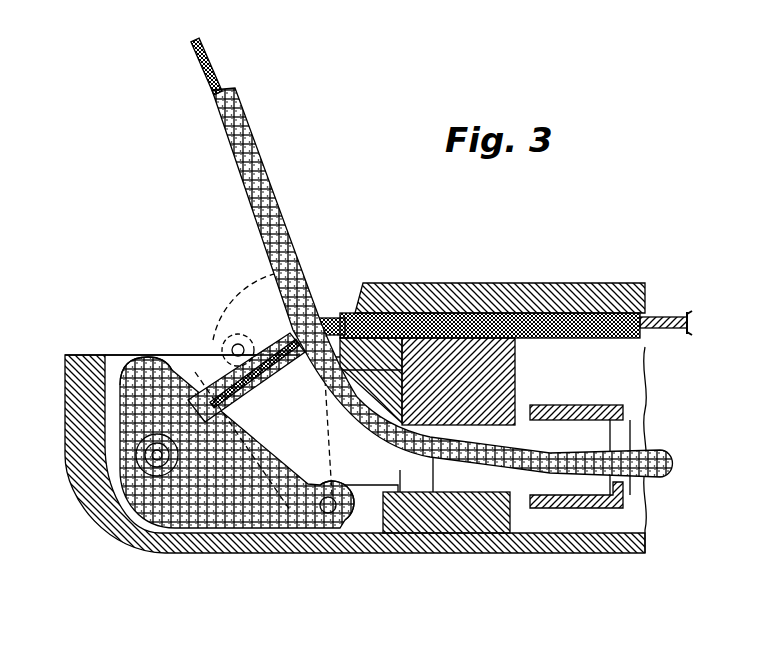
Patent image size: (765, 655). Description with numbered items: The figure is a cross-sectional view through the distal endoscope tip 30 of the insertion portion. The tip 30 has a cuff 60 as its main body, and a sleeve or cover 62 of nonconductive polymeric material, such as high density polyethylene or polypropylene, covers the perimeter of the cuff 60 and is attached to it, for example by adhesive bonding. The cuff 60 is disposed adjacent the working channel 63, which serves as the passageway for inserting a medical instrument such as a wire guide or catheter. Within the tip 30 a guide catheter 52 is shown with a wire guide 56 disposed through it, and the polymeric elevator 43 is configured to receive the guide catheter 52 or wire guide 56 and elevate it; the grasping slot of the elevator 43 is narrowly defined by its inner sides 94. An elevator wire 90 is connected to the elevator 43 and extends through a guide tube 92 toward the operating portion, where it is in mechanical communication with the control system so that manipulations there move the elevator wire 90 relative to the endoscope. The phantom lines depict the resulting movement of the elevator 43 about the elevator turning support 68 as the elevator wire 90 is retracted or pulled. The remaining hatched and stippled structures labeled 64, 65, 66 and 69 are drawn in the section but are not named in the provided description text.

The endoscope tip 30 is at (330, 282).
The elevator 43 is at (228, 513).
The guide catheter 52 is at (280, 233).
The wire guide 56 is at (217, 63).
The cuff 60 is at (437, 283).
The cover 62 is at (90, 503).
The working channel 63 is at (570, 510).
The lower block 64 is at (385, 530).
The cavity 65 is at (115, 368).
The lever end 66 is at (138, 358).
The elevator turning support 68 is at (327, 527).
The pin 69 is at (158, 360).
The elevator wire 90 is at (618, 283).
The guide tube 92 is at (582, 283).
The inner sides 94 is at (195, 372).